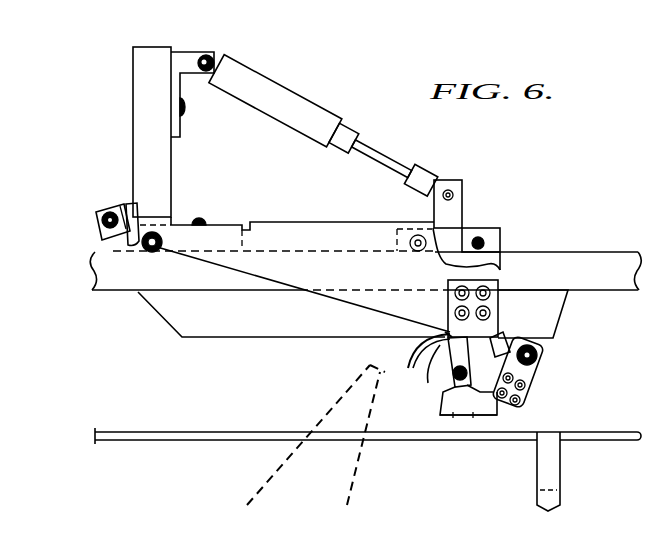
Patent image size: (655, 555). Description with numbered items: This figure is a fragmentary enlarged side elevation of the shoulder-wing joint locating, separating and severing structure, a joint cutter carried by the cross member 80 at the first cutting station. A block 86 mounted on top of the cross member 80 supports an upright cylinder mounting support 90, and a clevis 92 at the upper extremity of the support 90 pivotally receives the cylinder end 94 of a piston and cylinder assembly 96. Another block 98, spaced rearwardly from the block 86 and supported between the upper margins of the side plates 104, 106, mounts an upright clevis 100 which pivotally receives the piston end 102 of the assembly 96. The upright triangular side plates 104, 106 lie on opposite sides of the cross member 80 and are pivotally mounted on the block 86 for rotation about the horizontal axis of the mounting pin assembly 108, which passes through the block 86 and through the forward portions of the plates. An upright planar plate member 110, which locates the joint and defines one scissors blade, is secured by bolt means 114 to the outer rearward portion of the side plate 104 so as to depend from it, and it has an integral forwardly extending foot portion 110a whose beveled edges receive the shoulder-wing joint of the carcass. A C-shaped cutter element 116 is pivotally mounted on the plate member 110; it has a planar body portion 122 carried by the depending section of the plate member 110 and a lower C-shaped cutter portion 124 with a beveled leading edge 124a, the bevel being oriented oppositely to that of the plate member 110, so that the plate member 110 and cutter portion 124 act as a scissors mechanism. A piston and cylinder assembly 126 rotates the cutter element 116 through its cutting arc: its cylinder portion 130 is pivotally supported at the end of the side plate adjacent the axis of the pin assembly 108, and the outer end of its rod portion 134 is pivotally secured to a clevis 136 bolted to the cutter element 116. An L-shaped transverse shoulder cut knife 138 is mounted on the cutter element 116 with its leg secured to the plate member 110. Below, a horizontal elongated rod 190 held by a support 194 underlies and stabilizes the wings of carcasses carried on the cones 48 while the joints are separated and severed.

The cones 48 is at (337, 401).
The cross member 80 is at (602, 268).
The block 86 is at (232, 221).
The cylinder mounting support 90 is at (143, 88).
The clevis 92 is at (187, 53).
The cylinder end 94 is at (238, 76).
The piston and cylinder assembly 96 is at (323, 119).
The block 98 is at (465, 238).
The upright clevis 100 is at (450, 183).
The piston end 102 is at (412, 166).
The side plate 104 is at (270, 222).
The side plate 106 is at (500, 226).
The mounting pin assembly 108 is at (140, 252).
The plate member 110 is at (466, 410).
The foot portion 110a is at (440, 418).
The bolt means 114 is at (487, 291).
The cutter element 116 is at (483, 403).
The planar body portion 122 is at (525, 416).
The C-shaped cutter portion 124 is at (445, 333).
The beveled leading edge 124a is at (437, 348).
The piston and cylinder assembly 126 is at (120, 209).
The cylinder portion 130 is at (128, 243).
The rod portion 134 is at (502, 334).
The clevis 136 is at (542, 352).
The L-shaped transverse shoulder cut knife 138 is at (450, 330).
The rod 190 is at (117, 431).
The support 194 is at (560, 475).